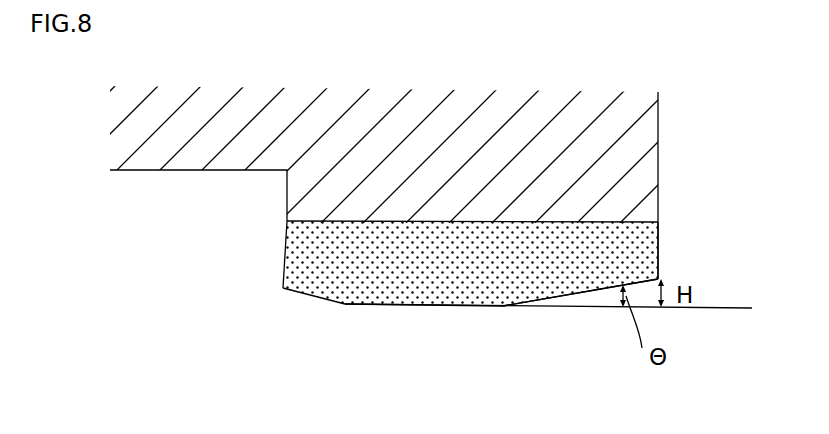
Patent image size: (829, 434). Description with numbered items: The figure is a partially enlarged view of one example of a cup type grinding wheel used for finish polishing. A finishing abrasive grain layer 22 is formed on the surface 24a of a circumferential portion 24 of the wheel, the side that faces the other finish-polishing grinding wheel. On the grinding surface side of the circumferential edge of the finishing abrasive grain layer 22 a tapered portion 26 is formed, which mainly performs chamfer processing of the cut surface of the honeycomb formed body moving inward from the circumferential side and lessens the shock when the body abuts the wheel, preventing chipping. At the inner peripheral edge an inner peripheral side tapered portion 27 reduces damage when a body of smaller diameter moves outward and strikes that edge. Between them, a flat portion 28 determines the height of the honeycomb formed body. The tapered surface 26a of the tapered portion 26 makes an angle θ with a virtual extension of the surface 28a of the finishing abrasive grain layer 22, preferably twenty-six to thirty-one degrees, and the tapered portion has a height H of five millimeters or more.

The circumferential portion 24 is at (638, 137).
The surface of circumferential portion 24a is at (577, 223).
The finishing abrasive grain layer 22 is at (485, 282).
The inner peripheral side tapered portion 27 is at (310, 297).
The flat portion 28 is at (396, 305).
The surface of finishing abrasive grain layer 28a is at (424, 305).
The tapered portion 26 is at (562, 295).
The tapered surface 26a is at (580, 292).